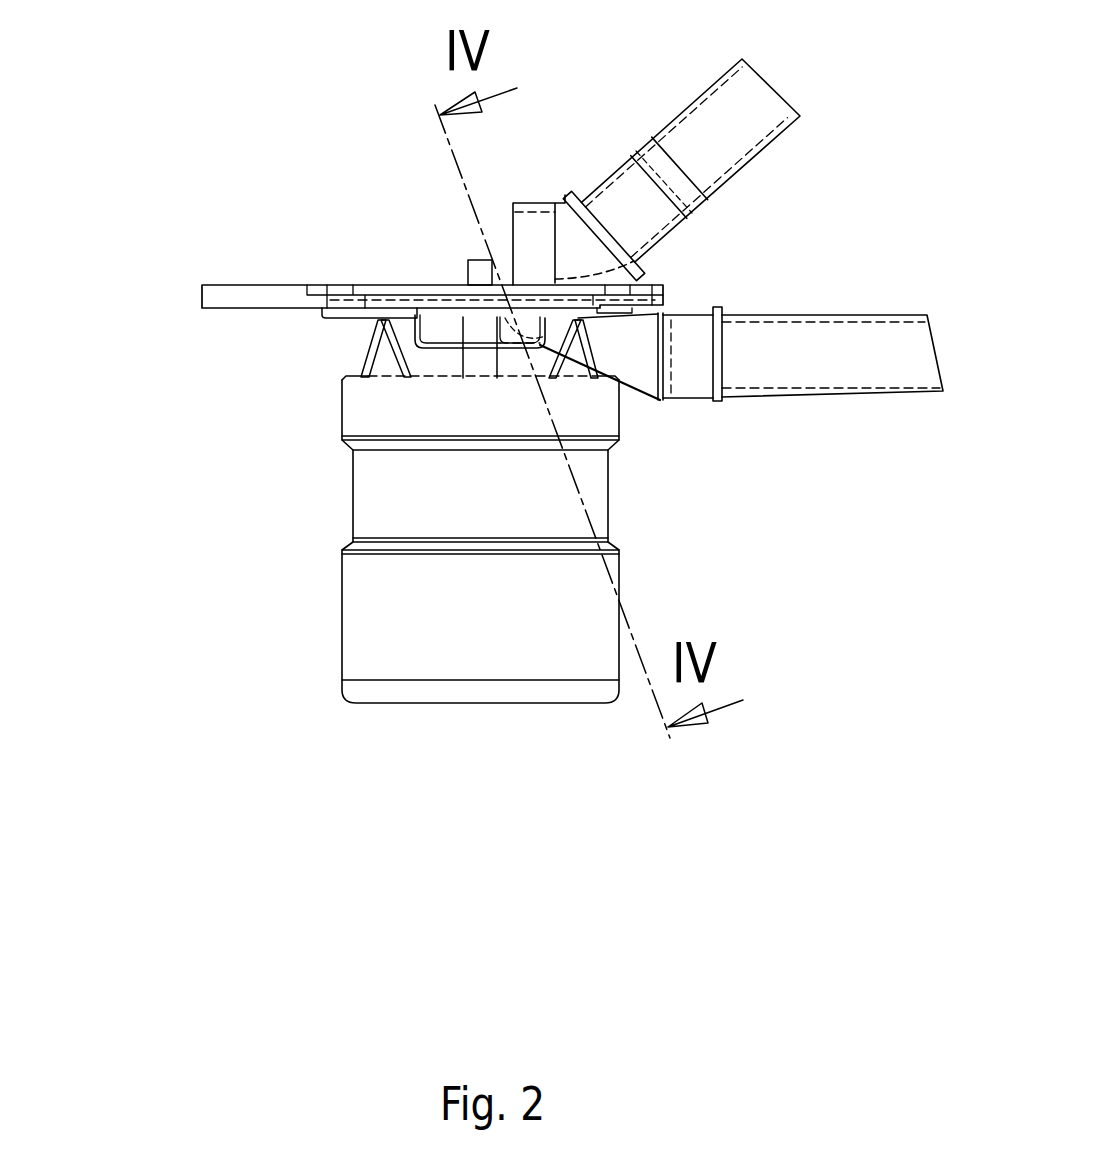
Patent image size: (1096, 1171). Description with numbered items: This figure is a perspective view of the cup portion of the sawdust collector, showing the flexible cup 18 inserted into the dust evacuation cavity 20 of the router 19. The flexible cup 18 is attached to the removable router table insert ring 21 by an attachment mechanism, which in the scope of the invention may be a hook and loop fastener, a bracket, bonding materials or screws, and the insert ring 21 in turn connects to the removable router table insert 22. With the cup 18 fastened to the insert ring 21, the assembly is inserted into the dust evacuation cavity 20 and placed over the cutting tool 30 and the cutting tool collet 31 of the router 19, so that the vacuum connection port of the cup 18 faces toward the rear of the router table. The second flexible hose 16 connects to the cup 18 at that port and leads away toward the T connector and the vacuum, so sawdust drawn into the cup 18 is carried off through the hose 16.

The second flexible hose 16 is at (795, 372).
The flexible cup 18 is at (452, 342).
The router 19 is at (562, 650).
The dust evacuation cavity 20 is at (450, 378).
The removable router table insert ring 21 is at (388, 300).
The removable router table insert 22 is at (317, 293).
The cutting tool 30 is at (470, 270).
The cutting tool collet 31 is at (478, 363).